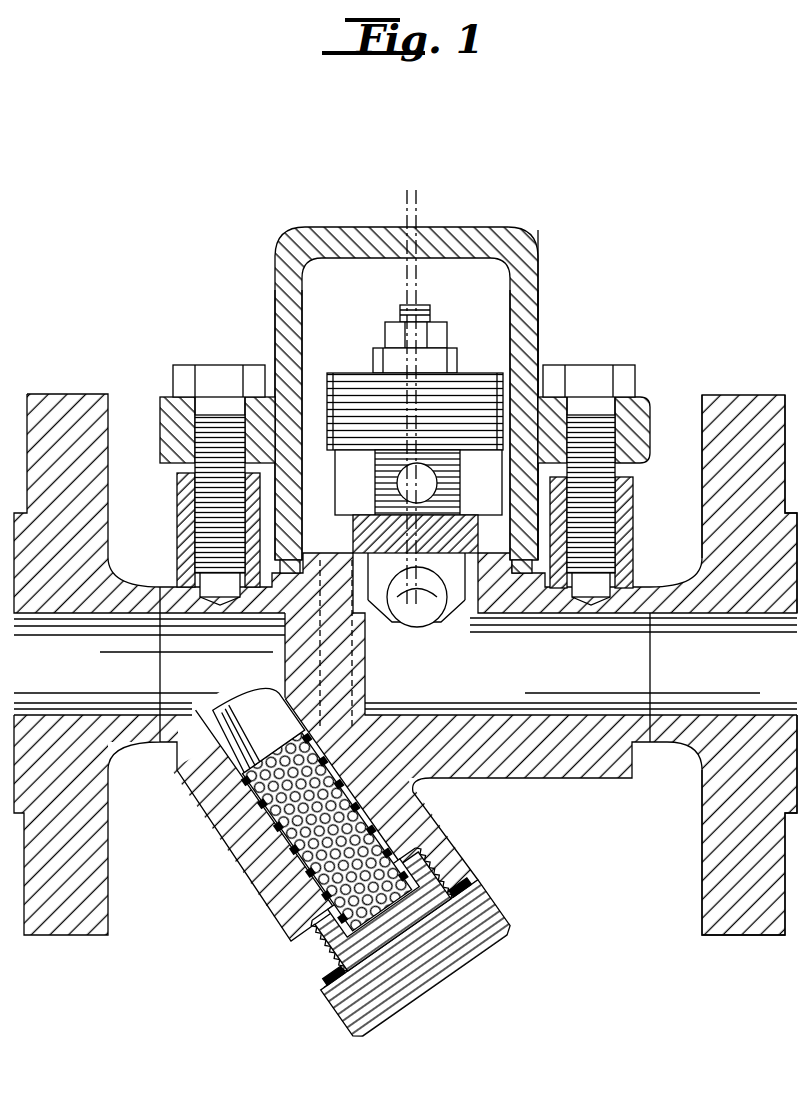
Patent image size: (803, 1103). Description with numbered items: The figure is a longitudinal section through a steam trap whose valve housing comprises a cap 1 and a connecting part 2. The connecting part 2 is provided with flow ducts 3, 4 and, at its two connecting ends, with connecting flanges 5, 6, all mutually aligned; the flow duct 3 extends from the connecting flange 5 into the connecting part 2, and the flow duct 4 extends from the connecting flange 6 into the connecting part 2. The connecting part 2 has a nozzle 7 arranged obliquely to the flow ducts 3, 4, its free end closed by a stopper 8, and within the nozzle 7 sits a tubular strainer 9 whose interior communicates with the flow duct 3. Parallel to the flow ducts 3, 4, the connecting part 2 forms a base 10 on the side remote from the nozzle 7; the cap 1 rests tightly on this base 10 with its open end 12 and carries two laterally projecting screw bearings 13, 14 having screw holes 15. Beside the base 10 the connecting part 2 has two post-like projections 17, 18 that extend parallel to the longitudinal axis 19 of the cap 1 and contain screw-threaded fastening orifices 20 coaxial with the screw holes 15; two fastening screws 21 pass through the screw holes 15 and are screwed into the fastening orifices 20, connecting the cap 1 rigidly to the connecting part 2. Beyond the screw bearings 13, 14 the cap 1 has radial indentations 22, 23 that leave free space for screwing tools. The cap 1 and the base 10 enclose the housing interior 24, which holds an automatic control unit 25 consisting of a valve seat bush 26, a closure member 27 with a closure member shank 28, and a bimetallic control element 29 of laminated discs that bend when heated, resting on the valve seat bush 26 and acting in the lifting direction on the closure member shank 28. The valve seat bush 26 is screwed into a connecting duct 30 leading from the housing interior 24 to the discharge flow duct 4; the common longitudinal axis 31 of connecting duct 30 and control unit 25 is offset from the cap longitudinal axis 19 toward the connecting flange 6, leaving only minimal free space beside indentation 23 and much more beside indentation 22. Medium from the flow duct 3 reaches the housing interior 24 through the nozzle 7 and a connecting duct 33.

The cap 1 is at (518, 225).
The connecting part 2 is at (600, 782).
The flow duct 3 is at (185, 683).
The flow duct 4 is at (540, 700).
The connecting flange 5 is at (67, 903).
The connecting flange 6 is at (743, 893).
The nozzle 7 is at (258, 870).
The stopper 8 is at (440, 975).
The tubular strainer 9 is at (293, 940).
The base 10 is at (312, 563).
The open end 12 is at (525, 573).
The screw bearing 13 is at (165, 398).
The screw bearing 14 is at (648, 400).
The screw holes 15 is at (193, 440).
The projection 17 is at (190, 520).
The projection 18 is at (625, 505).
The longitudinal axis of the cap 19 is at (403, 213).
The fastening orifices 20 is at (200, 575).
The fastening screws 21 is at (212, 373).
The radial indentation 22 is at (280, 284).
The radial indentation 23 is at (530, 282).
The housing interior 24 is at (330, 282).
The automatic control unit 25 is at (460, 350).
The valve seat bush 26 is at (368, 493).
The closure member 27 is at (405, 607).
The closure member shank 28 is at (427, 610).
The bimetallic control element 29 is at (357, 383).
The connecting duct 30 is at (457, 613).
The longitudinal axis of the control unit 31 is at (418, 197).
The connecting duct 33 is at (327, 660).